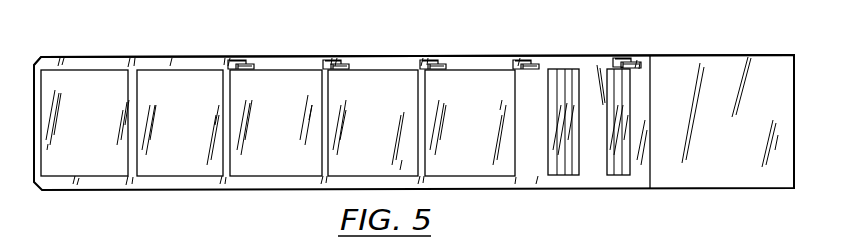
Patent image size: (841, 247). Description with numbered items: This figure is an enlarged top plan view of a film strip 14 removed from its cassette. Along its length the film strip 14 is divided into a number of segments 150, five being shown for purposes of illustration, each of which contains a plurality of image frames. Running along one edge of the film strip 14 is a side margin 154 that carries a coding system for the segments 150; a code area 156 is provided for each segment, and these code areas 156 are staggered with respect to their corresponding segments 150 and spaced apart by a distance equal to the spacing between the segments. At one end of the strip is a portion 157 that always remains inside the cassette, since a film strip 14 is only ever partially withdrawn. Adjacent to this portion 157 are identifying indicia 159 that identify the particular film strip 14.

The film strip 14 is at (125, 55).
The segments 150 is at (278, 123).
The side margin 154 is at (297, 62).
The code areas 156 is at (240, 58).
The portion 157 is at (716, 72).
The identifying indicia 159 is at (567, 172).